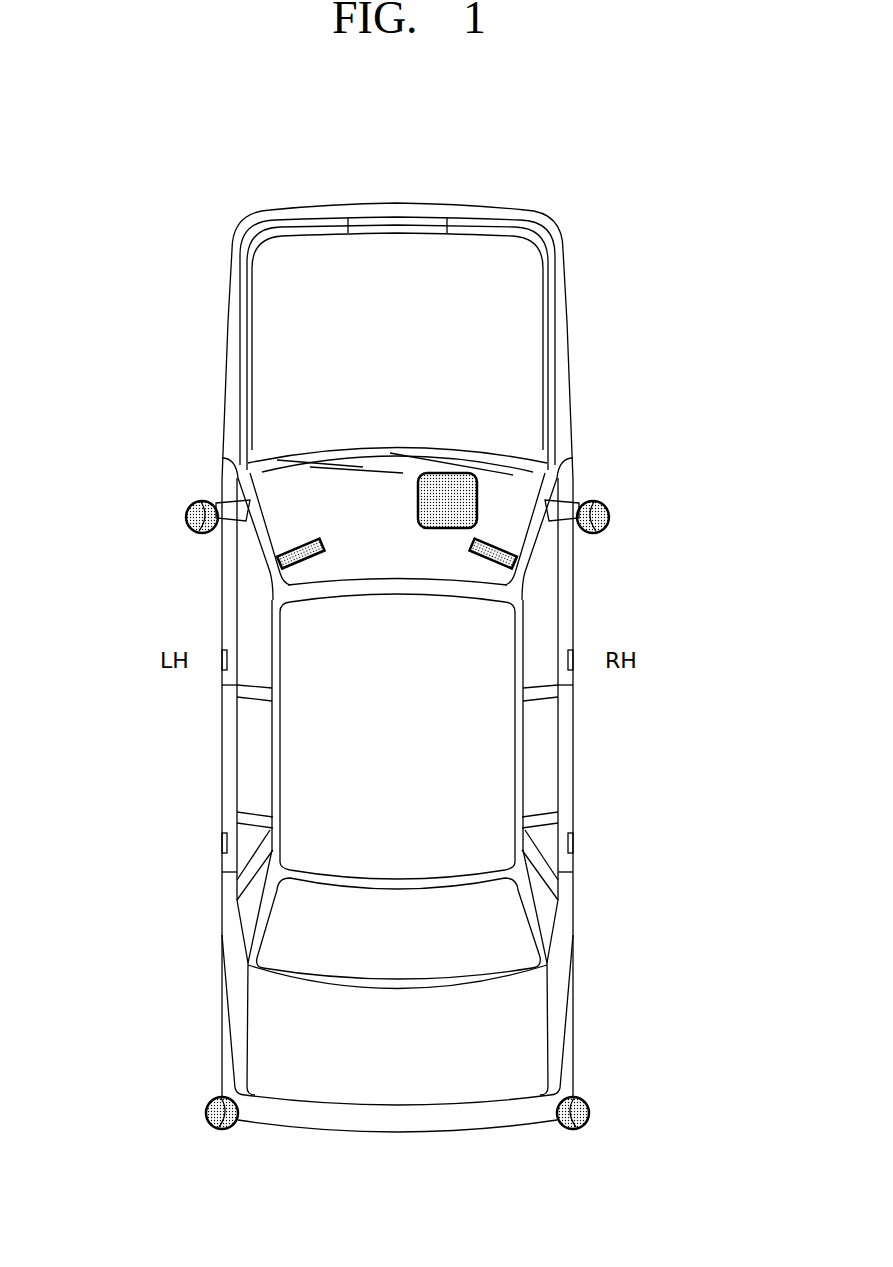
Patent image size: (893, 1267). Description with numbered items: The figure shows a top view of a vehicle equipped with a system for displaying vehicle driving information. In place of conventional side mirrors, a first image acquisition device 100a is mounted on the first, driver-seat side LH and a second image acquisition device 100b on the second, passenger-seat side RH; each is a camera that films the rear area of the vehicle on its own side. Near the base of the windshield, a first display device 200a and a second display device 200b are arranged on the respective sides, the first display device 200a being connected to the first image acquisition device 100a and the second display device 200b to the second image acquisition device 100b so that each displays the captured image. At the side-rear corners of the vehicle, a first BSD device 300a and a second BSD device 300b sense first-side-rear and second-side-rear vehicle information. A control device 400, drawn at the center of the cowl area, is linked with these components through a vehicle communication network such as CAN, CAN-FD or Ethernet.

The first image acquisition device 100a is at (187, 508).
The second image acquisition device 100b is at (608, 508).
The first display device 200a is at (285, 565).
The second display device 200b is at (510, 565).
The first BSD device 300a is at (207, 1104).
The second BSD device 300b is at (588, 1104).
The control device 400 is at (444, 500).